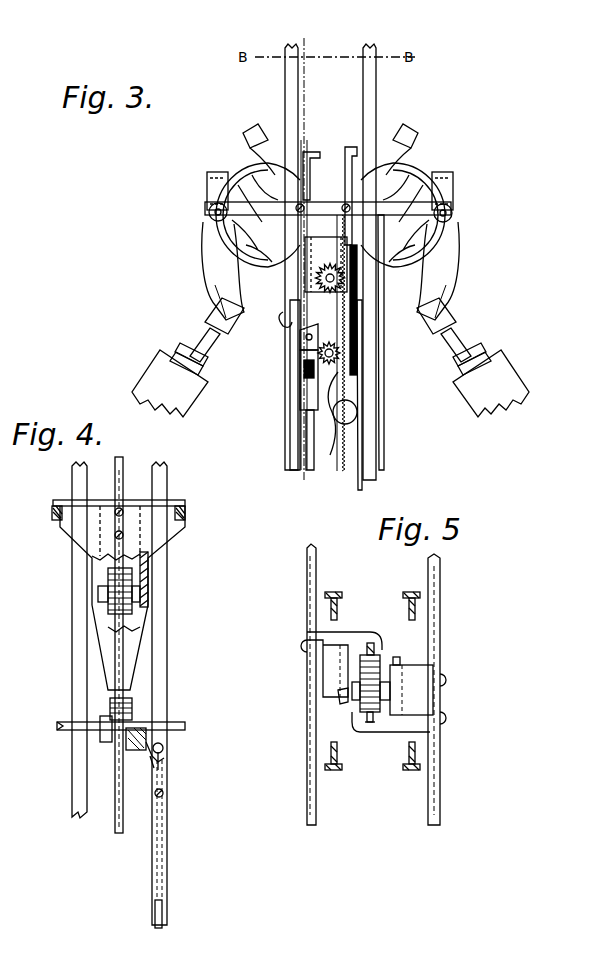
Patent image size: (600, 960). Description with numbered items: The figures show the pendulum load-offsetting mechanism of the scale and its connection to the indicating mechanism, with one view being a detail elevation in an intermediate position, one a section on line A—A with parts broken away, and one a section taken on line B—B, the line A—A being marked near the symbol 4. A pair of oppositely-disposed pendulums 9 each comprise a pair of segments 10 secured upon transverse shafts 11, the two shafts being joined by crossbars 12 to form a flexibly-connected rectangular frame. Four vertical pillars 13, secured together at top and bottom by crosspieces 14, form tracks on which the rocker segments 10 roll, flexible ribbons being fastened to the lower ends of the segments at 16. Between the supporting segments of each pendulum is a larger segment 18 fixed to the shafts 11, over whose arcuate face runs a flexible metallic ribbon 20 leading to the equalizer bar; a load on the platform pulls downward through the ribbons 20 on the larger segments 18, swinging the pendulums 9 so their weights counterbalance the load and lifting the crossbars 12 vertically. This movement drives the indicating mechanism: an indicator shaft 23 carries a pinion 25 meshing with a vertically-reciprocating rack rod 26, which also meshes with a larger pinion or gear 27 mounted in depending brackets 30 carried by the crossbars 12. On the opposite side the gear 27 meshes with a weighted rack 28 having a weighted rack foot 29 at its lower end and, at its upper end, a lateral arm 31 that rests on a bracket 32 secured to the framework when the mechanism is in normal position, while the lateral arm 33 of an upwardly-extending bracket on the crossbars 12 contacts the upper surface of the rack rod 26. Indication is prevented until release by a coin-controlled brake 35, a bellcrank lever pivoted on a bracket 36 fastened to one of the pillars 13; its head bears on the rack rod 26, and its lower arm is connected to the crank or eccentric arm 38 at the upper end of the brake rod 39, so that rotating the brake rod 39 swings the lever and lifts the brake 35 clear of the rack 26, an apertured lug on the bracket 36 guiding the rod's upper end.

In FIG. 3, the section line / guide rod 4 is at (308, 40).
In FIG. 3, the pendulum 9 is at (505, 362).
In FIG. 3, the segment 10 is at (412, 166).
In FIG. 3, the transverse shaft 11 is at (453, 214).
In FIG. 3, the crossbar 12 is at (454, 178).
In FIG. 3, the vertical pillar 13 is at (290, 90).
In FIG. 4, the vertical pillar 13 is at (168, 737).
In FIG. 5, the vertical pillar 13 is at (335, 592).
In FIG. 3, the crosspiece 14 is at (358, 345).
In FIG. 3, the ribbon fastening at segment lower end 16 is at (448, 280).
In FIG. 3, the larger segment 18 is at (392, 130).
In FIG. 3, the flexible metallic ribbon 20 is at (382, 462).
In FIG. 3, the indicator shaft 23 is at (325, 353).
In FIG. 3, the pinion 25 is at (330, 343).
In FIG. 4, the pinion 25 is at (133, 705).
In FIG. 3, the rack rod 26 is at (313, 444).
In FIG. 3, the larger pinion or gear 27 is at (345, 280).
In FIG. 4, the larger pinion or gear 27 is at (134, 590).
In FIG. 3, the weighted rack 28 is at (364, 378).
In FIG. 3, the weighted rack foot 29 is at (357, 417).
In FIG. 5, the weighted rack foot 29 is at (372, 690).
In FIG. 3, the depending bracket 30 is at (322, 255).
In FIG. 4, the depending bracket 30 is at (150, 572).
In FIG. 3, the lateral arm 31 is at (350, 147).
In FIG. 5, the lateral arm 31 is at (376, 720).
In FIG. 3, the bracket 32 is at (455, 318).
In FIG. 3, the lateral arm of upwardly-extending bracket 33 is at (306, 152).
In FIG. 5, the lateral arm of upwardly-extending bracket 33 is at (376, 650).
In FIG. 4, the brake 35 is at (168, 723).
In FIG. 4, the bracket 36 is at (164, 752).
In FIG. 3, the crank or eccentric arm 38 is at (300, 397).
In FIG. 4, the brake rod 39 is at (163, 924).